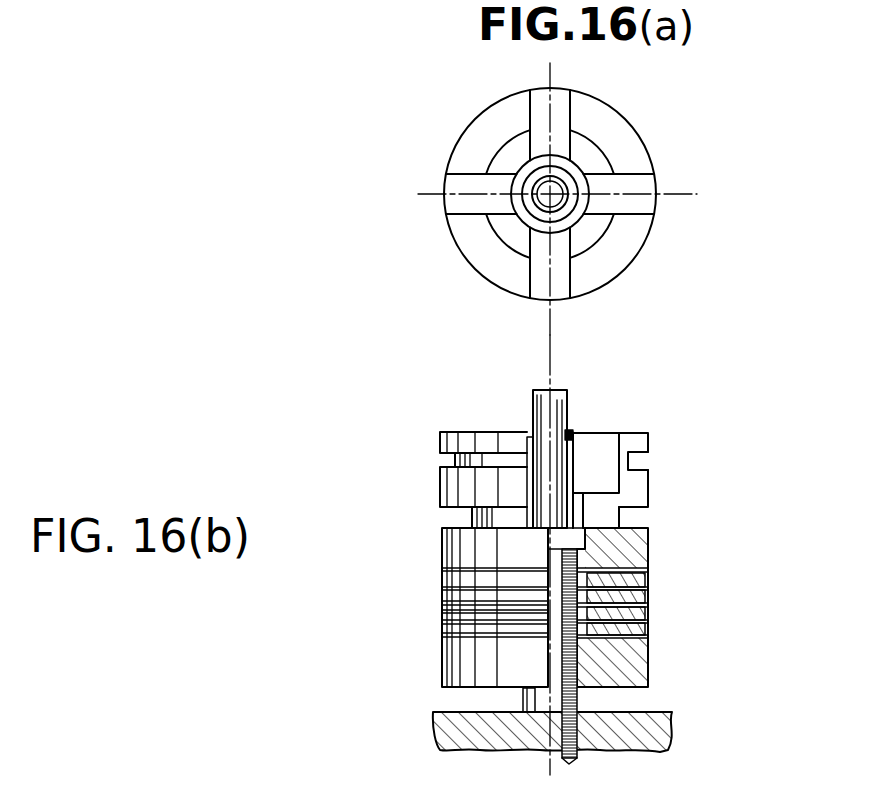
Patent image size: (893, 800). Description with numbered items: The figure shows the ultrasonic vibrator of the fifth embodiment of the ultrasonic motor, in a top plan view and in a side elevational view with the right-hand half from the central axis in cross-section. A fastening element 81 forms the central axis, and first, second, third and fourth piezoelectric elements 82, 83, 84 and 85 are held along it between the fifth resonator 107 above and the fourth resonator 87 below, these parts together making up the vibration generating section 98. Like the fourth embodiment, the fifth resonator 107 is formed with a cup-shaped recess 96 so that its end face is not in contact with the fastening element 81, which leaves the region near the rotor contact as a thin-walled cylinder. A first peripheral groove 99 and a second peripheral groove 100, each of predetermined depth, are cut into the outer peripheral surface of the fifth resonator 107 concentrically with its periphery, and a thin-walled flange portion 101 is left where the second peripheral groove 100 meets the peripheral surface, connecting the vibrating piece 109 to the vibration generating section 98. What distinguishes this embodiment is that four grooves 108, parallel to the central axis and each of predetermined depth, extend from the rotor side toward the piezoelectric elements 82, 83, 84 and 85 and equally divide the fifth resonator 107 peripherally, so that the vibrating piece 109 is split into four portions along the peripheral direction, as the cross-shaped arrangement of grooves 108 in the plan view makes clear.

In FIG. 16A, the fastening element 81 is at (565, 212).
In FIG. 16B, the fastening element 81 is at (555, 392).
In FIG. 16B, the first piezoelectric element 82 is at (648, 581).
In FIG. 16B, the second piezoelectric element 83 is at (648, 598).
In FIG. 16B, the third piezoelectric element 84 is at (648, 615).
In FIG. 16B, the fourth piezoelectric element 85 is at (648, 632).
In FIG. 16B, the fourth resonator 87 is at (648, 673).
In FIG. 16B, the recess 96 is at (607, 440).
In FIG. 16B, the vibration generating section 98 is at (422, 683).
In FIG. 16B, the first peripheral groove 99 is at (637, 461).
In FIG. 16B, the second peripheral groove 100 is at (634, 518).
In FIG. 16B, the flange portion 101 is at (618, 498).
In FIG. 16B, the fifth resonator 107 is at (678, 475).
In FIG. 16A, the grooves 108 is at (560, 101).
In FIG. 16B, the grooves 108 is at (530, 430).
In FIG. 16A, the vibrating piece 109 is at (480, 253).
In FIG. 16B, the vibrating piece 109 is at (422, 425).